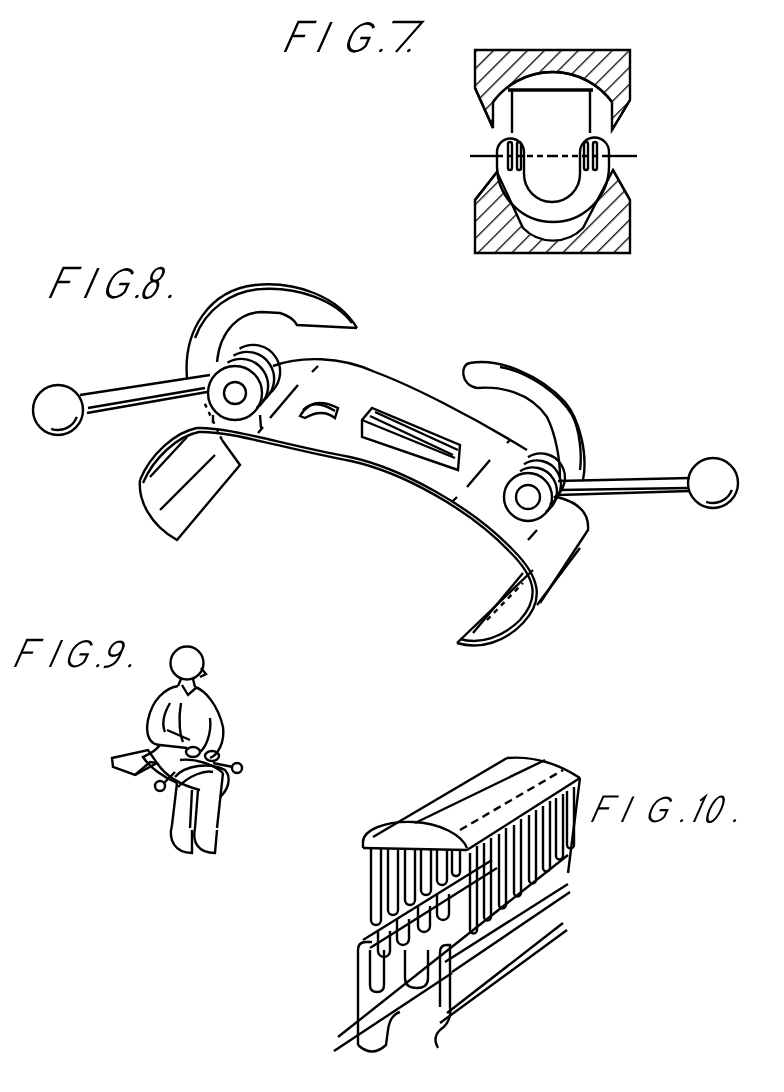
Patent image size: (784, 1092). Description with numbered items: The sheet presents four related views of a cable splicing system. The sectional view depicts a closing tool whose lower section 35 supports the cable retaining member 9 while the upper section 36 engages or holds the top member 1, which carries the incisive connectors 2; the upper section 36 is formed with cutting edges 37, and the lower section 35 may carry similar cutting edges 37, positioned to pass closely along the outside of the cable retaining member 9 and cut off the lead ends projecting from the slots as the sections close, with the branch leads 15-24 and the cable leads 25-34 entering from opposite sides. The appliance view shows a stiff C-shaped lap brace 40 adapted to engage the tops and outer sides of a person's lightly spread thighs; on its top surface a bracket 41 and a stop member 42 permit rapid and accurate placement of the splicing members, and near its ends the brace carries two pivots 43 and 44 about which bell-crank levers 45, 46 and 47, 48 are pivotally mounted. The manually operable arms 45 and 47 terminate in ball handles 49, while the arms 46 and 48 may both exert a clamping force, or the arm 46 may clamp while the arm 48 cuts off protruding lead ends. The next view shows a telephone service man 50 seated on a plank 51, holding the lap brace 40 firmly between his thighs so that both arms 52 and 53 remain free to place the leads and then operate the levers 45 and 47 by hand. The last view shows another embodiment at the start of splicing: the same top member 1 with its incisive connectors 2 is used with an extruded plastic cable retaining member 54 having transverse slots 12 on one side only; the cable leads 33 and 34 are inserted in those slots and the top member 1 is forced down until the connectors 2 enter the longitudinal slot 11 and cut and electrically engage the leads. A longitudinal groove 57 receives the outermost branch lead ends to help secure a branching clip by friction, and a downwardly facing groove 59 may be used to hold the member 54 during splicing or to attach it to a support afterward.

In FIG. 7, the top member 1 is at (527, 78).
In FIG. 10, the top member 1 is at (451, 798).
In FIG. 7, the incisive connectors 2 is at (583, 100).
In FIG. 10, the incisive connectors 2 is at (380, 862).
In FIG. 7, the cable retaining member 9 is at (590, 188).
In FIG. 7, the longitudinal slot 11 is at (510, 140).
In FIG. 10, the longitudinal slot 11 is at (372, 967).
In FIG. 10, the transverse slots 12 is at (362, 943).
In FIG. 7, the branch leads 15-24 is at (637, 156).
In FIG. 7, the cable leads 25-34 is at (472, 156).
In FIG. 10, the cable lead 33 is at (335, 1050).
In FIG. 10, the cable lead 34 is at (347, 1023).
In FIG. 7, the lower section 35 is at (482, 221).
In FIG. 7, the upper section 36 is at (606, 50).
In FIG. 7, the cutting edges 37 is at (618, 127).
In FIG. 8, the lap brace 40 is at (391, 384).
In FIG. 9, the lap brace 40 is at (220, 790).
In FIG. 8, the bracket 41 is at (397, 447).
In FIG. 8, the stop member 42 is at (315, 418).
In FIG. 8, the pivot 43 is at (583, 550).
In FIG. 8, the pivot 44 is at (252, 412).
In FIG. 8, the manually-operable arm 45 is at (629, 480).
In FIG. 9, the manually-operable arm 45 is at (230, 764).
In FIG. 8, the clamping arm 46 is at (546, 383).
In FIG. 8, the manually-operable arm 47 is at (140, 388).
In FIG. 9, the manually-operable arm 47 is at (162, 793).
In FIG. 8, the lever arm 48 is at (338, 305).
In FIG. 8, the ball handles 49 is at (63, 430).
In FIG. 9, the telephone service man 50 is at (188, 706).
In FIG. 9, the plank 51 is at (112, 754).
In FIG. 9, the arm 52 is at (155, 720).
In FIG. 9, the arm 53 is at (215, 712).
In FIG. 10, the cable retaining member 54 is at (433, 1018).
In FIG. 10, the longitudinal groove 57 is at (464, 970).
In FIG. 10, the downwardly facing groove 59 is at (387, 1033).